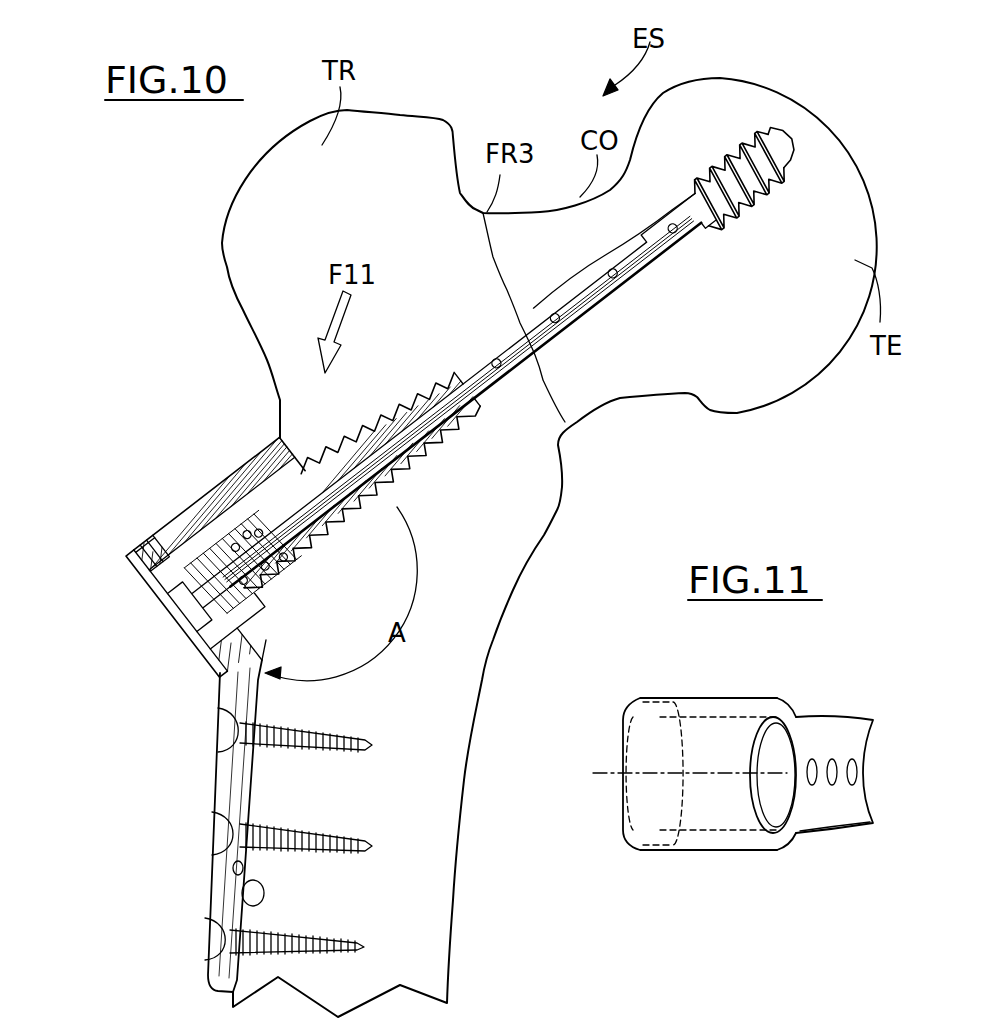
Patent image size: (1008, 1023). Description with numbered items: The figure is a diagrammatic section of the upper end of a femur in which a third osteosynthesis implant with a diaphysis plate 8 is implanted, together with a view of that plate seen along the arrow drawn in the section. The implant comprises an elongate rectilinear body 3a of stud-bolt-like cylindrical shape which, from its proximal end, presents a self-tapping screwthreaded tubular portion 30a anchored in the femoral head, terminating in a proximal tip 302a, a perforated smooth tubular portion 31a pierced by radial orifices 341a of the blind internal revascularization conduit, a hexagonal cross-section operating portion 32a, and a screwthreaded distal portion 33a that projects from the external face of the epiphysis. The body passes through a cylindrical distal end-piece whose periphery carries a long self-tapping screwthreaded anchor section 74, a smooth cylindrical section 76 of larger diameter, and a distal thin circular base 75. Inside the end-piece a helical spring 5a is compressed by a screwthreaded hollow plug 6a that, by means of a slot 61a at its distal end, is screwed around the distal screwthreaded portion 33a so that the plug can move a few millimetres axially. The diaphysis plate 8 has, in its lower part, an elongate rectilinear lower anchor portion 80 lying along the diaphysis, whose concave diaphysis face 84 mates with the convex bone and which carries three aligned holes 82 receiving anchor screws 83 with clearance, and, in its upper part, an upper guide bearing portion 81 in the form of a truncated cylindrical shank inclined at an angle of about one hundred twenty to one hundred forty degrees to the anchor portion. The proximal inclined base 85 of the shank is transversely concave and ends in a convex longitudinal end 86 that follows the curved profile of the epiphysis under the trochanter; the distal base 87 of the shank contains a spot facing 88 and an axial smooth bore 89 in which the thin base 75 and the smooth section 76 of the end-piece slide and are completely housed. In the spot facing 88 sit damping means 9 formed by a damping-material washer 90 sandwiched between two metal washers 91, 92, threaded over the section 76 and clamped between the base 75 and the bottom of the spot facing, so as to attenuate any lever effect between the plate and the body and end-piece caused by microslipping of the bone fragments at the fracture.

In FIG. 10, the lag screw tip 302a is at (753, 133).
In FIG. 10, the proximal self-tapping screwthreaded tubular portion 30a is at (768, 190).
In FIG. 10, the radial orifices 341a is at (616, 277).
In FIG. 10, the perforated smooth tubular portion 31a is at (590, 306).
In FIG. 10, the elongate rectilinear body 3a is at (500, 380).
In FIG. 10, the hexagonal cross-section operating portion 32a is at (371, 403).
In FIG. 10, the proximal self-tapping screwthreaded anchor section 74 is at (313, 448).
In FIG. 10, the convex longitudinal end 86 is at (266, 425).
In FIG. 11, the convex longitudinal end 86 is at (766, 730).
In FIG. 10, the upper guide bearing portion 81 is at (200, 505).
In FIG. 11, the upper guide bearing portion 81 is at (697, 710).
In FIG. 10, the axial smooth bore 89 is at (268, 512).
In FIG. 11, the axial smooth bore 89 is at (792, 838).
In FIG. 10, the damping means 9 is at (72, 443).
In FIG. 10, the metal washer 92 is at (158, 540).
In FIG. 10, the washer 90 is at (152, 548).
In FIG. 10, the metal washer 91 is at (145, 557).
In FIG. 10, the smooth cylindrical section 76 is at (190, 545).
In FIG. 10, the helical spring 5a is at (252, 520).
In FIG. 10, the spot facing 88 is at (132, 556).
In FIG. 11, the spot facing 88 is at (636, 718).
In FIG. 10, the distal thin circular base 75 is at (143, 575).
In FIG. 10, the distal base 87 is at (148, 590).
In FIG. 10, the slot 61a is at (168, 618).
In FIG. 10, the screwthreaded distal portion 33a is at (178, 628).
In FIG. 10, the screwthreaded hollow plug 6a is at (210, 650).
In FIG. 10, the proximal inclined base 85 is at (268, 594).
In FIG. 11, the proximal inclined base 85 is at (808, 710).
In FIG. 10, the diaphysis plate 8 is at (203, 753).
In FIG. 10, the lower anchor portion 80 is at (237, 775).
In FIG. 11, the lower anchor portion 80 is at (847, 815).
In FIG. 10, the holes 82 is at (233, 874).
In FIG. 11, the holes 82 is at (812, 788).
In FIG. 10, the diaphysis face 84 is at (262, 900).
In FIG. 11, the diaphysis face 84 is at (837, 737).
In FIG. 10, the anchor screws 83 is at (345, 938).